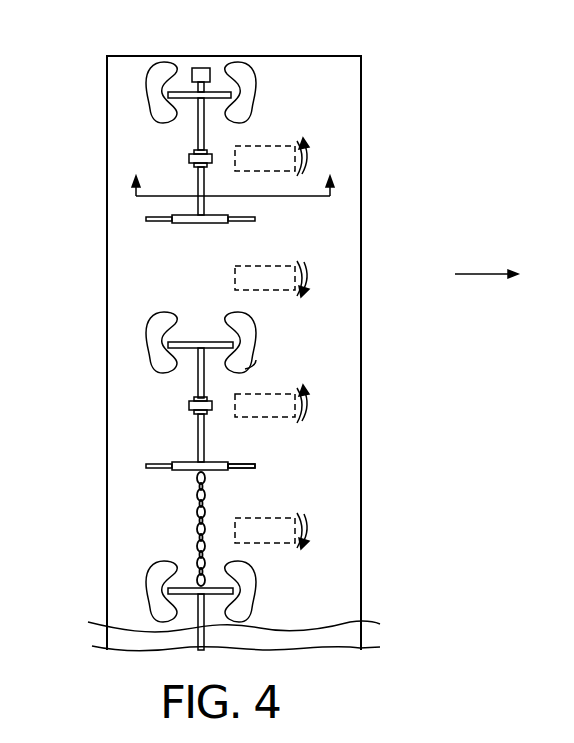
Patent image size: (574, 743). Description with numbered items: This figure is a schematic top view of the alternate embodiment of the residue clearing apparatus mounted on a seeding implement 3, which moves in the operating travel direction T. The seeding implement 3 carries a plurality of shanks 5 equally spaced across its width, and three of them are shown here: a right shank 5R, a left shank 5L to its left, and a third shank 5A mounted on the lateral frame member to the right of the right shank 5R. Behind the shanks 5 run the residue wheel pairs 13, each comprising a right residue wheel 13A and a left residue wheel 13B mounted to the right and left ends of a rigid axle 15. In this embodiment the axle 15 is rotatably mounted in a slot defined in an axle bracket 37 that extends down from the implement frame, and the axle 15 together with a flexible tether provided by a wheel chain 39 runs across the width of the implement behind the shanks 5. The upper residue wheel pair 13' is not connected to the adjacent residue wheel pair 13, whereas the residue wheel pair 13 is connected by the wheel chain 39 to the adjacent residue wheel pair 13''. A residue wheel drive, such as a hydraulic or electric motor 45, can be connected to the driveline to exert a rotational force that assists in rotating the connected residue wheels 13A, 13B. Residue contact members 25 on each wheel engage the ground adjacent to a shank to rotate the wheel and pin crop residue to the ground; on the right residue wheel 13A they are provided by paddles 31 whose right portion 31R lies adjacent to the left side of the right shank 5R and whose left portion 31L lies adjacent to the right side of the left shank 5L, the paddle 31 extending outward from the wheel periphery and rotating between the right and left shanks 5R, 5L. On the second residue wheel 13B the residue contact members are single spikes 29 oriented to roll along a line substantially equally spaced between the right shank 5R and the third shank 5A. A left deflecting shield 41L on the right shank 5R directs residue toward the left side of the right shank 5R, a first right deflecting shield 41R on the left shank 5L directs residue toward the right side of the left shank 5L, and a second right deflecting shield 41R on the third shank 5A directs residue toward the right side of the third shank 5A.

The seeding implement 3 is at (443, 132).
The shank 5 is at (272, 146).
The left shank 5L is at (272, 266).
The right shank 5R is at (260, 418).
The third shank 5A is at (272, 518).
The residue wheel pair 13 is at (125, 373).
The residue wheel pair 13' is at (125, 127).
The residue wheel pair 13'' is at (210, 622).
The right residue wheel 13A is at (188, 341).
The left residue wheel 13B is at (180, 470).
The axle 15 is at (197, 435).
The residue contact member 25 is at (257, 70).
The spike 29 is at (245, 466).
The paddle 31 is at (257, 342).
The left portion of paddle 31L is at (258, 316).
The right portion of paddle 31R is at (256, 368).
The axle bracket 37 is at (189, 405).
The wheel chain 39 is at (197, 532).
The left deflecting shield 41L is at (306, 155).
The right deflecting shield 41R is at (306, 276).
The motor 45 is at (211, 74).
The operating travel direction T is at (496, 275).